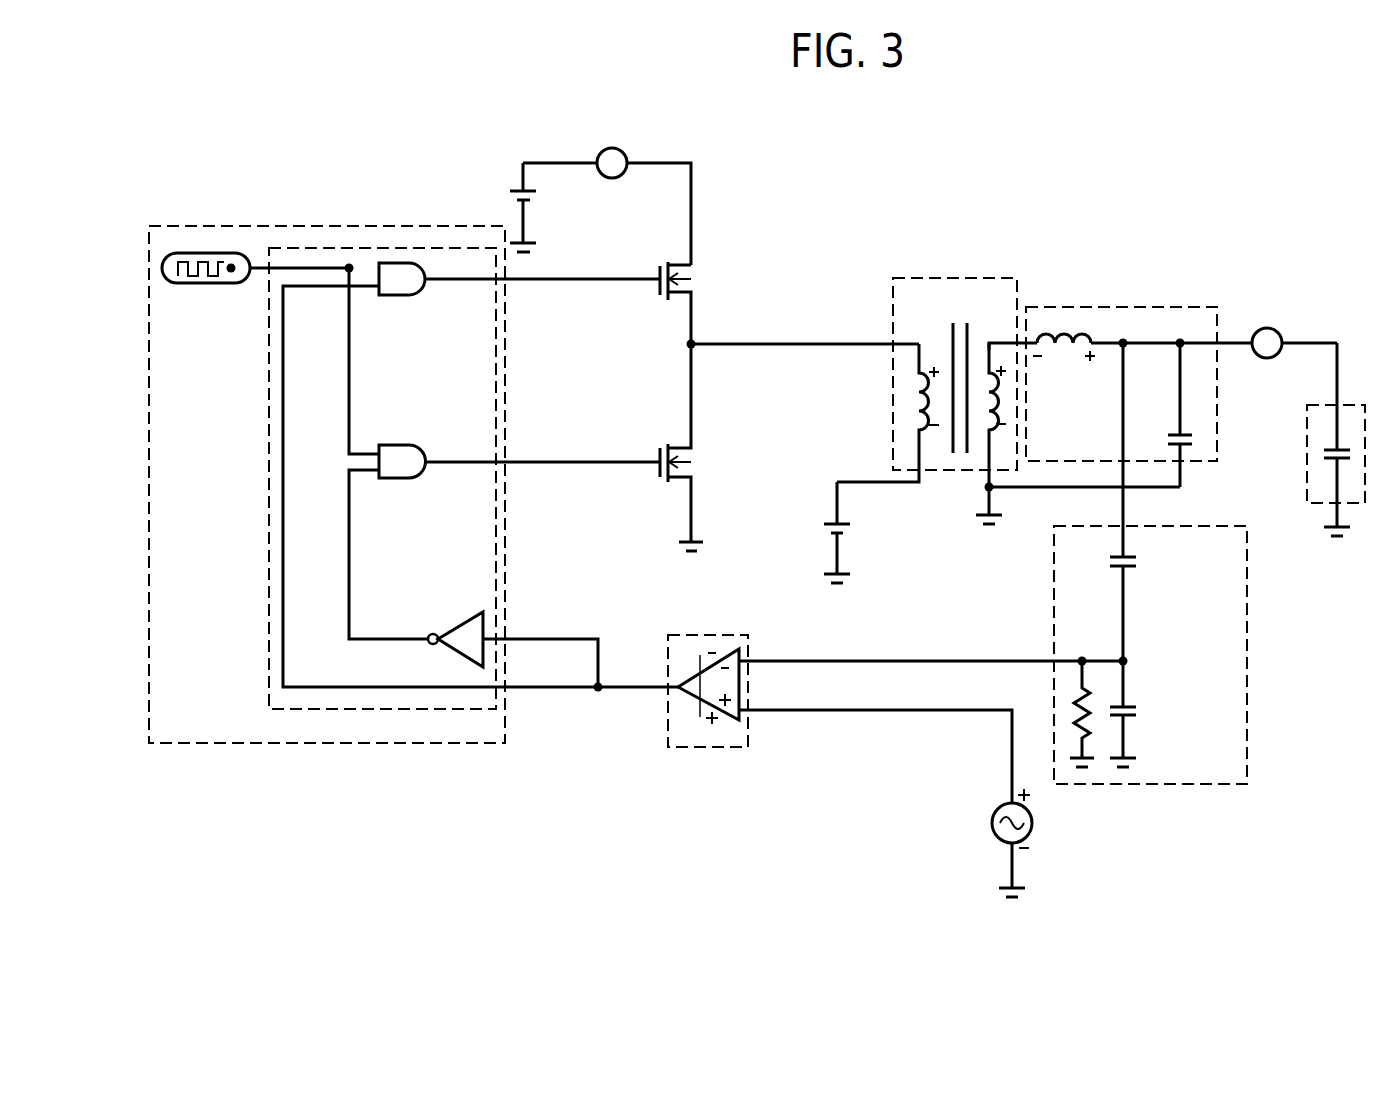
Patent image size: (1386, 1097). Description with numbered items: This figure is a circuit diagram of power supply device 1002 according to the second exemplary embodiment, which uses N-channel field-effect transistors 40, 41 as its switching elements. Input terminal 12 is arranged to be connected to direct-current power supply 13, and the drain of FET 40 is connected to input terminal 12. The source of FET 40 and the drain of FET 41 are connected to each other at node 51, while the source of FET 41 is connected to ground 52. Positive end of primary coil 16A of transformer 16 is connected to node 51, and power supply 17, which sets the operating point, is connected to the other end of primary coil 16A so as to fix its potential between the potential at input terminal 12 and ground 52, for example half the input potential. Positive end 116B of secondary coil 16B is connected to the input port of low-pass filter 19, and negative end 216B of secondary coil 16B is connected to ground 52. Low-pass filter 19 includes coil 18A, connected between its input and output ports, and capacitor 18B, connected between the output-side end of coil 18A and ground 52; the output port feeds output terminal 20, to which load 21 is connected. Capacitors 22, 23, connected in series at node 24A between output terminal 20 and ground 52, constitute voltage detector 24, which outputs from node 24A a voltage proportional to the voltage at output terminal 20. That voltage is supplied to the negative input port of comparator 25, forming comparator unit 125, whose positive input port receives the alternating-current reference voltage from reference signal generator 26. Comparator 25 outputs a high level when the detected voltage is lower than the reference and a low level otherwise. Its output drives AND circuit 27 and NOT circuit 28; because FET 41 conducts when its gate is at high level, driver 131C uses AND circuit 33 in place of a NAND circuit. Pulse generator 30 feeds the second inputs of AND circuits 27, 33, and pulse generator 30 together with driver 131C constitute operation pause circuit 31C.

The power supply device 1002 is at (1259, 246).
The input terminal 12 is at (611, 178).
The direct-current power supply 13 is at (512, 183).
The transformer 16 is at (918, 275).
The primary coil 16A is at (905, 400).
The secondary coil 16B is at (983, 360).
The positive end of secondary coil 116B is at (993, 345).
The negative end of secondary coil 216B is at (988, 445).
The power supply for setting an operating point 17 is at (815, 526).
The coil 18A is at (1057, 330).
The capacitor 18B is at (1198, 440).
The low-pass filter 19 is at (1142, 305).
The output terminal 20 is at (1265, 328).
The load 21 is at (1358, 402).
The capacitor 22 is at (1140, 565).
The capacitor 23 is at (1140, 712).
The voltage detector 24 is at (1248, 655).
The node 24A is at (1118, 657).
The comparator 25 is at (732, 652).
The comparator unit 125 is at (668, 722).
The reference signal generator 26 is at (1033, 830).
The AND circuit 27 is at (398, 298).
The NOT circuit 28 is at (463, 622).
The pulse generator 30 is at (205, 288).
The operation pause circuit 31C is at (340, 226).
The driver 131C is at (268, 487).
The AND circuit 33 is at (399, 443).
The N-channel field-effect transistor 40 is at (706, 278).
The N-channel field-effect transistor 41 is at (706, 461).
The node 51 is at (688, 345).
The ground 52 is at (703, 552).